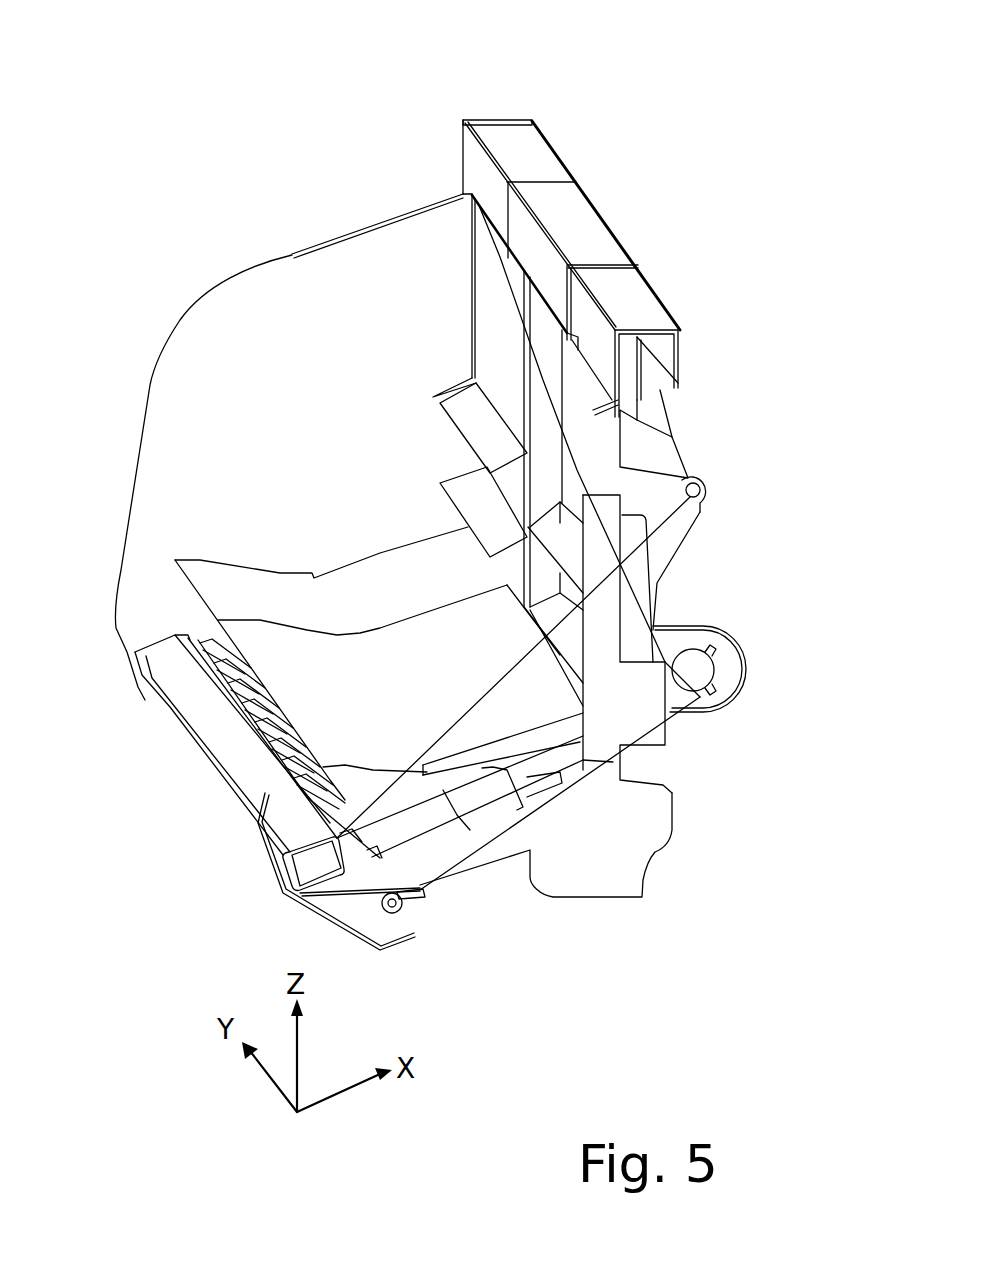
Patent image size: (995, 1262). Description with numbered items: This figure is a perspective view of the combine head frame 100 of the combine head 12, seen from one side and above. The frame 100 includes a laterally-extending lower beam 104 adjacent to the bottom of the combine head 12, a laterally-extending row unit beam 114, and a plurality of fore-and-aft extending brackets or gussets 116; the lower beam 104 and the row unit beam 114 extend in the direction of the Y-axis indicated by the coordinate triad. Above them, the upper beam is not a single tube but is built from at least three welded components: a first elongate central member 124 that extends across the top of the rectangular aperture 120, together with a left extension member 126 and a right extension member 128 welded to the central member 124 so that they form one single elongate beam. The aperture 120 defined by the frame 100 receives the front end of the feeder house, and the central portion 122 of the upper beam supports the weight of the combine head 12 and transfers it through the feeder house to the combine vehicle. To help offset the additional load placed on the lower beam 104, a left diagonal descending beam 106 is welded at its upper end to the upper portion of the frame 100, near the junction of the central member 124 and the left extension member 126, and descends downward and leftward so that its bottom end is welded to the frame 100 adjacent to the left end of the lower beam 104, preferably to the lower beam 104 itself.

The combine head 12 is at (124, 222).
The right extension member 128 is at (556, 158).
The first elongate central member 124 is at (588, 220).
The central portion 122 is at (626, 210).
The left extension member 126 is at (657, 293).
The rectangular aperture 120 is at (590, 460).
The left diagonal descending beam 106 is at (633, 613).
The combine head frame 100 is at (742, 600).
The laterally-extending row unit beam 114 is at (253, 765).
The laterally-extending lower beam 104 is at (633, 832).
The fore-and-aft extending brackets or gussets 116 is at (414, 836).